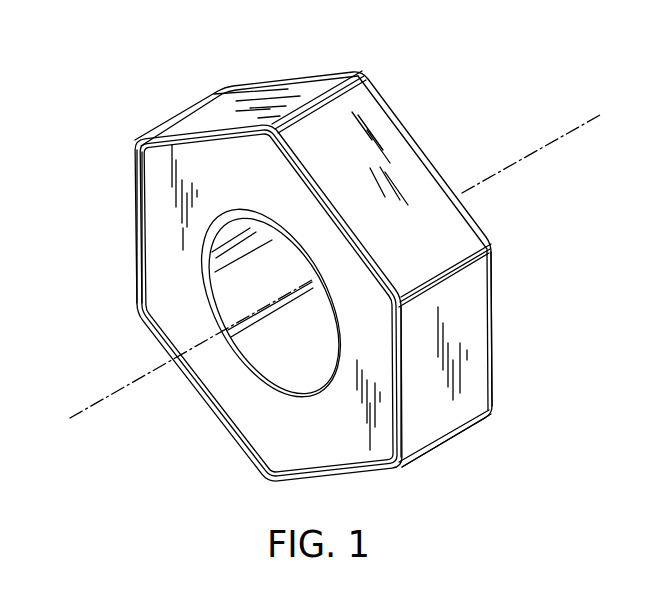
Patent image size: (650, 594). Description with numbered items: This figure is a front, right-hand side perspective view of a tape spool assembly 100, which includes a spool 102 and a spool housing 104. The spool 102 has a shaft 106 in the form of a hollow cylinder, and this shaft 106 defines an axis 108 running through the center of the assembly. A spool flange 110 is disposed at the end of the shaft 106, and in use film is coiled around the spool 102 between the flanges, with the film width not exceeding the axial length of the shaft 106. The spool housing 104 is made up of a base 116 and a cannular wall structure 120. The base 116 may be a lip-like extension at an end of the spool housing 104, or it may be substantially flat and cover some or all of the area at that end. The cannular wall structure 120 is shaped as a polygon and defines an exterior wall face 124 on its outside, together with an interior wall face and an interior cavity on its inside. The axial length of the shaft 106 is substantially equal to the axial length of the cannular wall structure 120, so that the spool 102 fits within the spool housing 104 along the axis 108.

The spool assembly 100 is at (90, 107).
The spool 102 is at (262, 418).
The spool housing 104 is at (475, 458).
The shaft 106 is at (228, 223).
The axis 108 is at (133, 381).
The spool flange 110 is at (170, 292).
The base 116 is at (495, 268).
The cannular wall structure 120 is at (477, 353).
The exterior wall face 124 is at (390, 136).